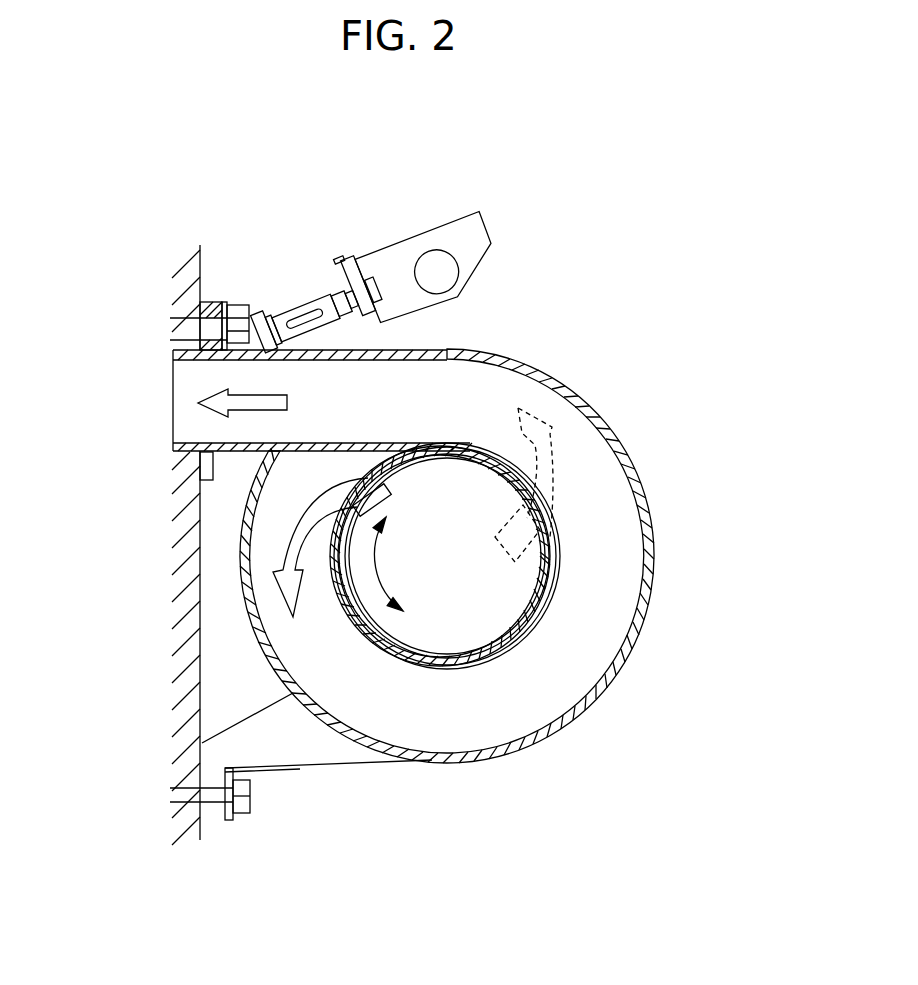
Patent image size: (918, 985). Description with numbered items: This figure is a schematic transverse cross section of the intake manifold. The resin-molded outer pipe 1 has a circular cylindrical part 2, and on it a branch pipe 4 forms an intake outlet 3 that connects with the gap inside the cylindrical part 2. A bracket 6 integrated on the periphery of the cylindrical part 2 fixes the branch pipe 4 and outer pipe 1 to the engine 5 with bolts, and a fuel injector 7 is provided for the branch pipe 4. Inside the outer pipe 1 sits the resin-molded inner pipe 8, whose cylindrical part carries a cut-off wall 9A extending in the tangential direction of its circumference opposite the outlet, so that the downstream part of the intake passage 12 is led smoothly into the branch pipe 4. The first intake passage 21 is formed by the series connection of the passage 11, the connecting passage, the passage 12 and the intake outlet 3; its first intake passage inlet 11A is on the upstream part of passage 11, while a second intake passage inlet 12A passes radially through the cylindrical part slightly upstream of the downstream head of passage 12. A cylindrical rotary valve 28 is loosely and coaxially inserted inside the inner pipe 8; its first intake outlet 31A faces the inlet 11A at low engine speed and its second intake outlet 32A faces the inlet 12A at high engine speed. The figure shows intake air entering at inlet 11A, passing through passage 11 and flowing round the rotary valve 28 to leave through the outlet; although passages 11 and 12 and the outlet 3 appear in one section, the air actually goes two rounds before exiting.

The outer pipe 1 is at (583, 377).
The circular cylindrical part 2 is at (647, 507).
The intake outlet 3 is at (183, 393).
The branch pipe 4 is at (205, 462).
The engine 5 is at (205, 274).
The bracket 6 is at (365, 768).
The fuel injector 7 is at (343, 266).
The inner pipe 8 is at (483, 657).
The cut-off wall 9A is at (305, 448).
The intake passage 11 is at (283, 633).
The first intake passage inlet 11A is at (380, 455).
The intake passage 12 is at (600, 467).
The second intake passage inlet 12A is at (553, 537).
The first intake passage 21 is at (600, 644).
The rotary valve 28 is at (410, 645).
The first intake outlet 31A is at (397, 470).
The second intake outlet 32A is at (503, 633).